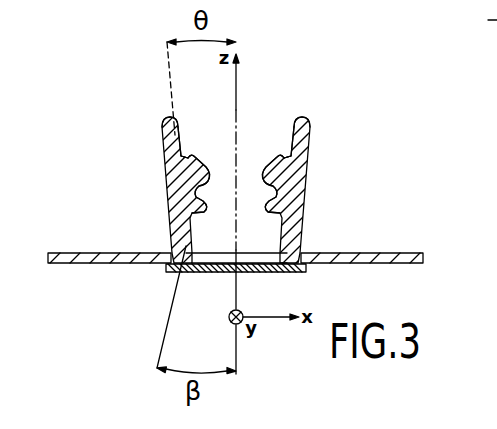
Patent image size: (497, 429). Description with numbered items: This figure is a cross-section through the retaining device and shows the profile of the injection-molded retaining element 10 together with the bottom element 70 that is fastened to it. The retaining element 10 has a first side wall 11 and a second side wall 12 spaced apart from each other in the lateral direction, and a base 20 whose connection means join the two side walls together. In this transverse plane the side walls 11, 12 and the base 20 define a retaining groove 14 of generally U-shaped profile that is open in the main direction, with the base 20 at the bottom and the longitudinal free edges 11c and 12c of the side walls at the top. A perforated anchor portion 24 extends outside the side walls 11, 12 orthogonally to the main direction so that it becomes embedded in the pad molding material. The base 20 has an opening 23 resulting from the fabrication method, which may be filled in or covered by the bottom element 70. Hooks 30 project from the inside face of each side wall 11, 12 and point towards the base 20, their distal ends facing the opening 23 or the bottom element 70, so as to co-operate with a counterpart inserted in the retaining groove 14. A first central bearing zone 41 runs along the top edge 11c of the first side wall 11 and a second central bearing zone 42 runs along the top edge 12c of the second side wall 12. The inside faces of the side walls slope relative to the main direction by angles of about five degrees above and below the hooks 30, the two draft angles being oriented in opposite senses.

The retaining element 10 is at (90, 153).
The first side wall 11 is at (168, 153).
The longitudinal free edge of first side wall 11c is at (164, 120).
The second side wall 12 is at (300, 154).
The longitudinal free edge of second side wall 12c is at (306, 116).
The retaining groove 14 is at (246, 163).
The base 20 is at (197, 262).
The opening 23 is at (249, 264).
The anchor portion 24 is at (77, 257).
The hook 30 is at (210, 172).
The first central bearing zone 41 is at (191, 150).
The second central bearing zone 42 is at (286, 150).
The bottom element 70 is at (217, 264).